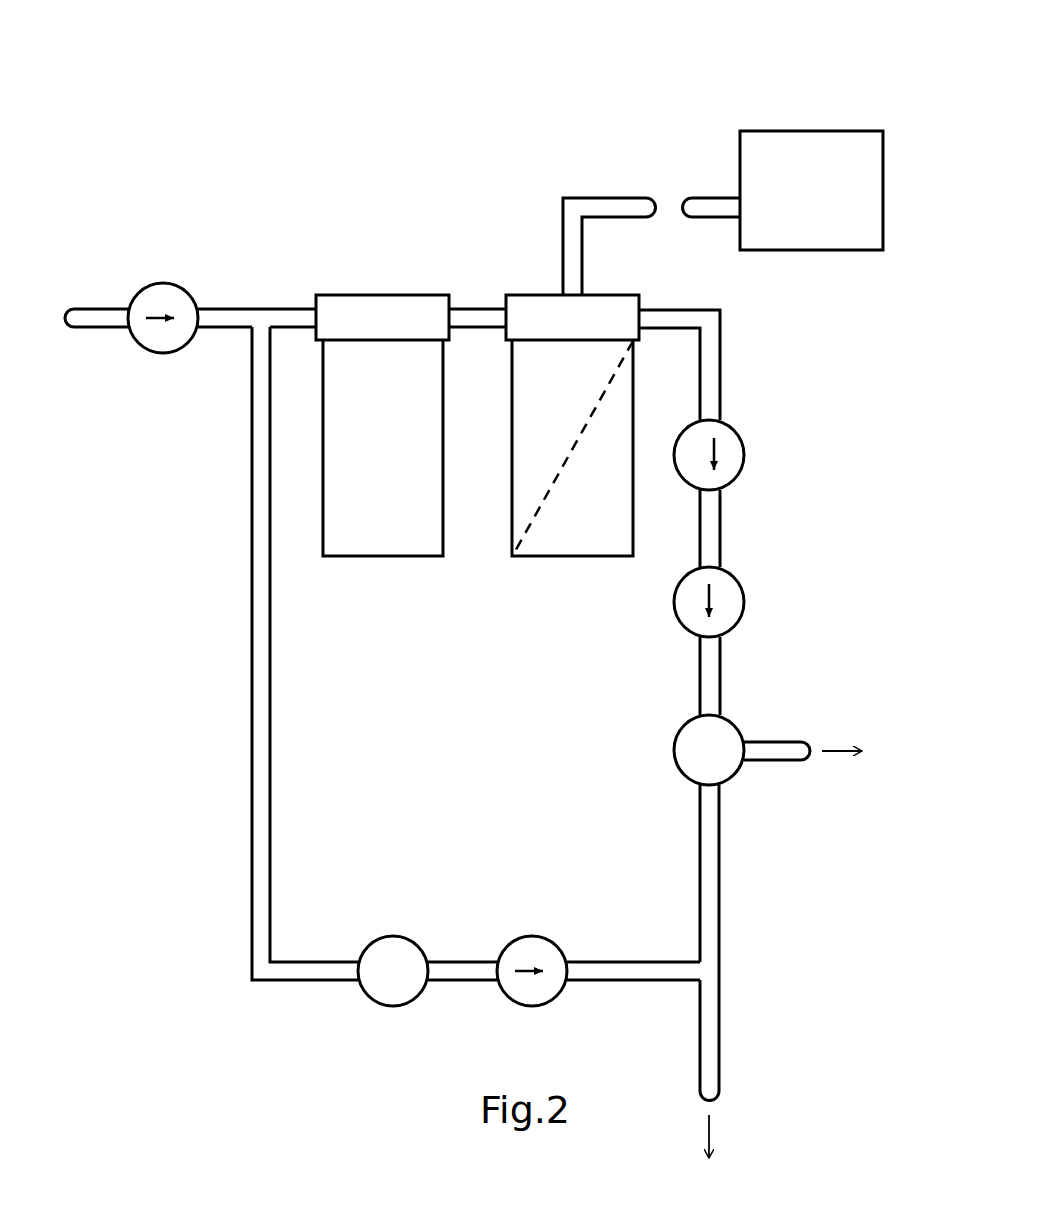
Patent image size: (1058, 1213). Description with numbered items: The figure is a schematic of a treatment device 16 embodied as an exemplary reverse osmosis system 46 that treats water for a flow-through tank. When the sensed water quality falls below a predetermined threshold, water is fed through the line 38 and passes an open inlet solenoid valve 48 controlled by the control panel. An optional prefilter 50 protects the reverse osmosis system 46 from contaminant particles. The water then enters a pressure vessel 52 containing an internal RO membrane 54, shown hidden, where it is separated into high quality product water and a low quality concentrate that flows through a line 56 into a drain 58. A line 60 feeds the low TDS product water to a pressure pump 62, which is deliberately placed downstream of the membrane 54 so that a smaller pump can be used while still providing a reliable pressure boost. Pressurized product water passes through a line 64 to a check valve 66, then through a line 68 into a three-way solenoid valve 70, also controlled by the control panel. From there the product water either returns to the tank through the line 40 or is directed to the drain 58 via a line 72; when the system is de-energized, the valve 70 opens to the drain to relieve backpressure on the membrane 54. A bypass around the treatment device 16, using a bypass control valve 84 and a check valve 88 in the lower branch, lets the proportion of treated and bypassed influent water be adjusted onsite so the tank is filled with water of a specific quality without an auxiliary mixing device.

The treatment device 16 is at (314, 162).
The line 38 is at (97, 315).
The line 40 is at (705, 961).
The reverse osmosis system 46 is at (505, 284).
The inlet solenoid valve 48 is at (188, 342).
The prefilter 50 is at (375, 546).
The pressure vessel 52 is at (523, 510).
The RO membrane 54 is at (562, 468).
The line 56 is at (618, 205).
The drain 58 is at (862, 175).
The line 60 is at (680, 310).
The pressure pump 62 is at (745, 460).
The line 64 is at (705, 535).
The check valve 66 is at (745, 615).
The line 68 is at (708, 675).
The three-way solenoid valve 70 is at (676, 770).
The line 72 is at (775, 756).
The bypass control valve 84 is at (393, 936).
The check valve 88 is at (550, 940).